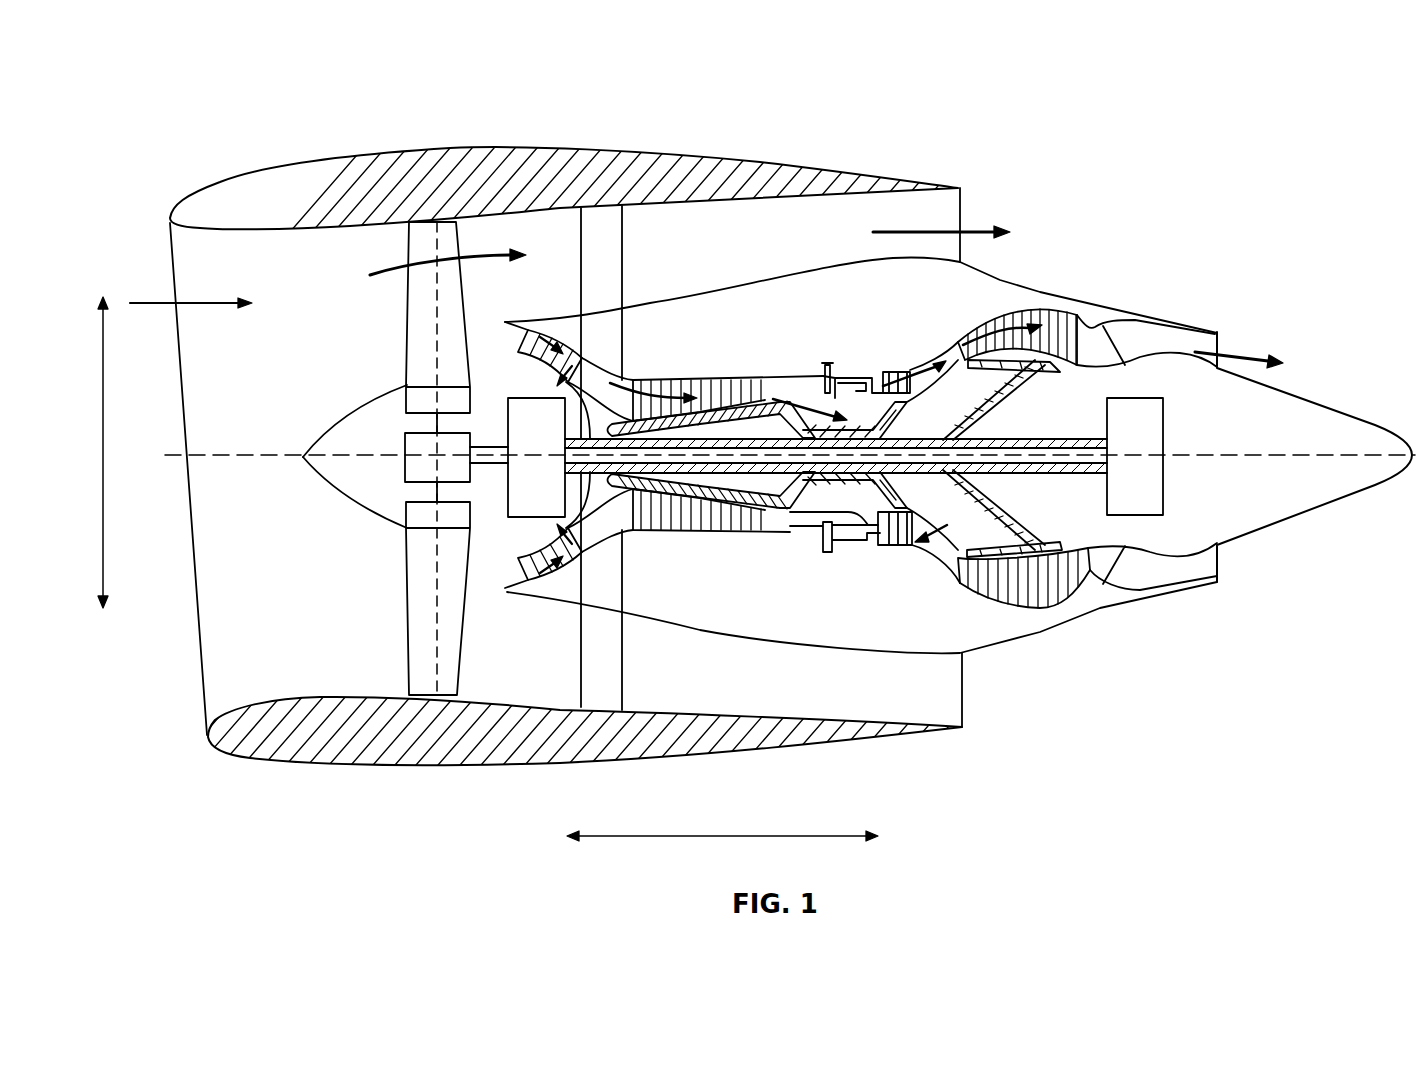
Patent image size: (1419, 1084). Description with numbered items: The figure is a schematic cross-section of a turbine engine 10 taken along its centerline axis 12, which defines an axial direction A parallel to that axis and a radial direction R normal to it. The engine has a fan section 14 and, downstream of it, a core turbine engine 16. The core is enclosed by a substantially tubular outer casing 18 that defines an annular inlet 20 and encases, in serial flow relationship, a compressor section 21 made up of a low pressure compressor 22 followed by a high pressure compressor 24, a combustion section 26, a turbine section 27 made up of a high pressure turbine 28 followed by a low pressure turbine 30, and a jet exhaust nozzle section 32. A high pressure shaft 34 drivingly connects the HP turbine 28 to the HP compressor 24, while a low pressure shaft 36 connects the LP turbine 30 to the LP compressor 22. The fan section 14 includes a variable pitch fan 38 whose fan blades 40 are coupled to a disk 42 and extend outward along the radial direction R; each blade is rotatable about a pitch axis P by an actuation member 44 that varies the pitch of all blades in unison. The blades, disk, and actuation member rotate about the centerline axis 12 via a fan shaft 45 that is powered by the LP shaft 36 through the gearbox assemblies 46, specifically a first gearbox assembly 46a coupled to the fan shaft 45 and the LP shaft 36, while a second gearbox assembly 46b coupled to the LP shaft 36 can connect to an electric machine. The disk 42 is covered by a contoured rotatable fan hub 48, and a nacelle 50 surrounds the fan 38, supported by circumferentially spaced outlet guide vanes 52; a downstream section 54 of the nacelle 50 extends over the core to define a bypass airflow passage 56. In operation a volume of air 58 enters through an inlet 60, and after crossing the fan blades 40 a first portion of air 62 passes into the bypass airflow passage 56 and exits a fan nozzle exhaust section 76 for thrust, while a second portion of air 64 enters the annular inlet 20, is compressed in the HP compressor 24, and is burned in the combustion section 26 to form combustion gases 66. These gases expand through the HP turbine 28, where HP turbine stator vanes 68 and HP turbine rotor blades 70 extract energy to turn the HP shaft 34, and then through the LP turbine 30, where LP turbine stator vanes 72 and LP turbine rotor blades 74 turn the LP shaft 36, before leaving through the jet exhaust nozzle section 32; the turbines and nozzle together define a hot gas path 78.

The turbine engine 10 is at (1240, 117).
The centerline axis 12 is at (1168, 452).
The fan section 14 is at (355, 243).
The core turbine engine 16 is at (843, 296).
The outer casing 18 is at (750, 632).
The annular inlet 20 is at (519, 582).
The compressor section 21 is at (698, 323).
The low pressure compressor 22 is at (578, 588).
The high pressure compressor 24 is at (664, 525).
The combustion section 26 is at (842, 549).
The turbine section 27 is at (958, 309).
The high pressure turbine 28 is at (943, 533).
The low pressure turbine 30 is at (1053, 612).
The jet exhaust nozzle section 32 is at (1117, 598).
The high pressure shaft 34 is at (825, 368).
The low pressure shaft 36 is at (945, 432).
The fan 38 is at (341, 509).
The fan blades 40 is at (405, 592).
The disk 42 is at (428, 400).
The actuation member 44 is at (405, 445).
The fan shaft 45 is at (518, 410).
The gearbox assemblies 46 is at (598, 356).
The first gearbox assembly 46a is at (553, 345).
The second gearbox assembly 46b is at (1140, 398).
The fan hub 48 is at (318, 472).
The nacelle 50 is at (388, 768).
The outlet guide vanes 52 is at (625, 238).
The downstream section 54 is at (866, 172).
The bypass airflow passage 56 is at (731, 238).
The volume of air 58 is at (215, 302).
The inlet 60 is at (192, 625).
The first portion of air 62 is at (375, 276).
The second portion of air 64 is at (507, 321).
The combustion gases 66 is at (883, 372).
The HP turbine stator vanes 68 is at (866, 543).
The HP turbine rotor blades 70 is at (898, 521).
The LP turbine stator vanes 72 is at (966, 578).
The LP turbine rotor blades 74 is at (983, 587).
The fan nozzle exhaust section 76 is at (962, 205).
The hot gas path 78 is at (957, 349).
The pitch axis P is at (437, 255).
The radial direction R is at (85, 452).
The axial direction A is at (735, 836).